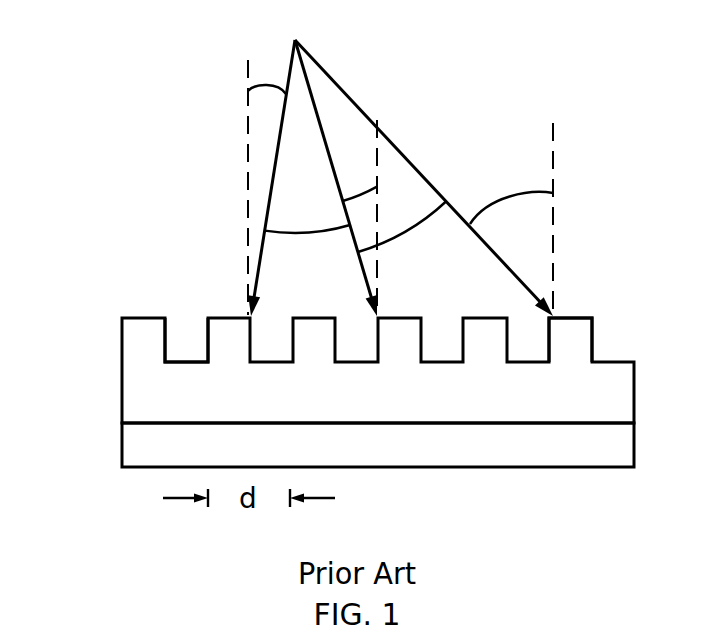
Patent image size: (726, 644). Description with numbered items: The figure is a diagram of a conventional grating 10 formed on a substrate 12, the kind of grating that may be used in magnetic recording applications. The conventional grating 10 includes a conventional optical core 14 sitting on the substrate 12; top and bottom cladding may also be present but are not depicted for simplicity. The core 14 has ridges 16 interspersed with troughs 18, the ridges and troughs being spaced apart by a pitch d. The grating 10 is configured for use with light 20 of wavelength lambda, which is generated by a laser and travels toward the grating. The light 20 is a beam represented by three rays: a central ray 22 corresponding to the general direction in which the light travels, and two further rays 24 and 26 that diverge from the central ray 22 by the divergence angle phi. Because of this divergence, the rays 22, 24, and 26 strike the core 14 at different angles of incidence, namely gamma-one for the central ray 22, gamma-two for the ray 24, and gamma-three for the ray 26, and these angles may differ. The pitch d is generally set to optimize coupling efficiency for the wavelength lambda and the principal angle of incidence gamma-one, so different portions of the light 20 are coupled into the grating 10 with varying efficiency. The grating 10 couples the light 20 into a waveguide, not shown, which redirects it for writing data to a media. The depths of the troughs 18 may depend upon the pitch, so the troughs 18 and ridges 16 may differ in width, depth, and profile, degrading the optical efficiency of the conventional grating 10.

The conventional grating 10 is at (341, 33).
The substrate 12 is at (440, 467).
The conventional optical core 14 is at (122, 393).
The ridges 16 is at (616, 332).
The troughs 18 is at (186, 326).
The light 20 is at (136, 210).
The central ray 22 is at (320, 125).
The ray 24 is at (416, 175).
The ray 26 is at (268, 188).